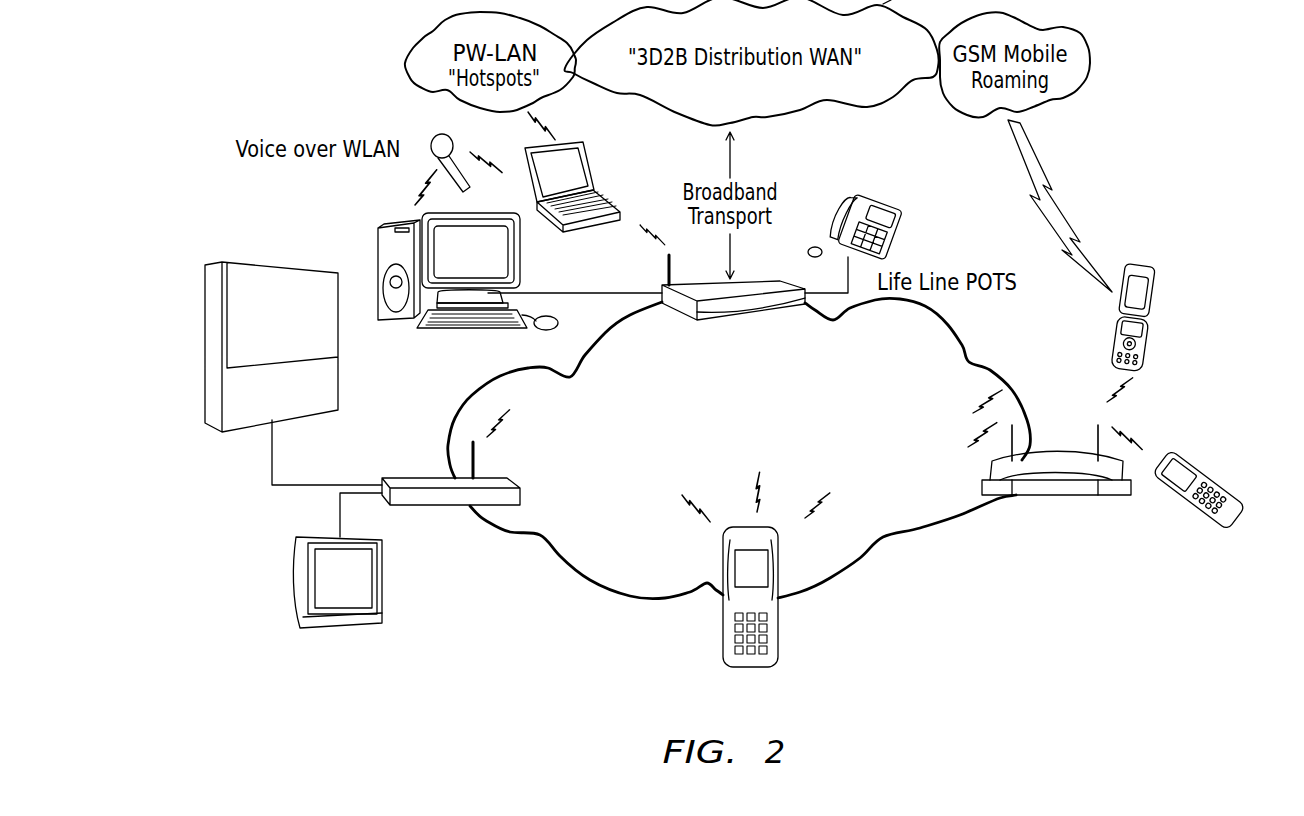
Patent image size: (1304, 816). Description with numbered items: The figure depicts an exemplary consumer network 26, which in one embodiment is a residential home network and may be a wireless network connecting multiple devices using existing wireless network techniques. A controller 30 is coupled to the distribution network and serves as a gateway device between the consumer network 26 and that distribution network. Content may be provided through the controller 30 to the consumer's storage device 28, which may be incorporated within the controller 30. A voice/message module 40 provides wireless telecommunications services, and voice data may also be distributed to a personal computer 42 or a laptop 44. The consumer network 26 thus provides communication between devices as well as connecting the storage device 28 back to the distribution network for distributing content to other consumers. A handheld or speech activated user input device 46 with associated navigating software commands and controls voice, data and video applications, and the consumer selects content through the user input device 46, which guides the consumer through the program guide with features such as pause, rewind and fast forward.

The consumer network 26 is at (634, 598).
The storage device 28 is at (512, 510).
The controller 30 is at (690, 308).
The voice/message module 40 is at (1130, 487).
The personal computer 42 is at (432, 332).
The laptop 44 is at (590, 172).
The user input device 46 is at (780, 628).